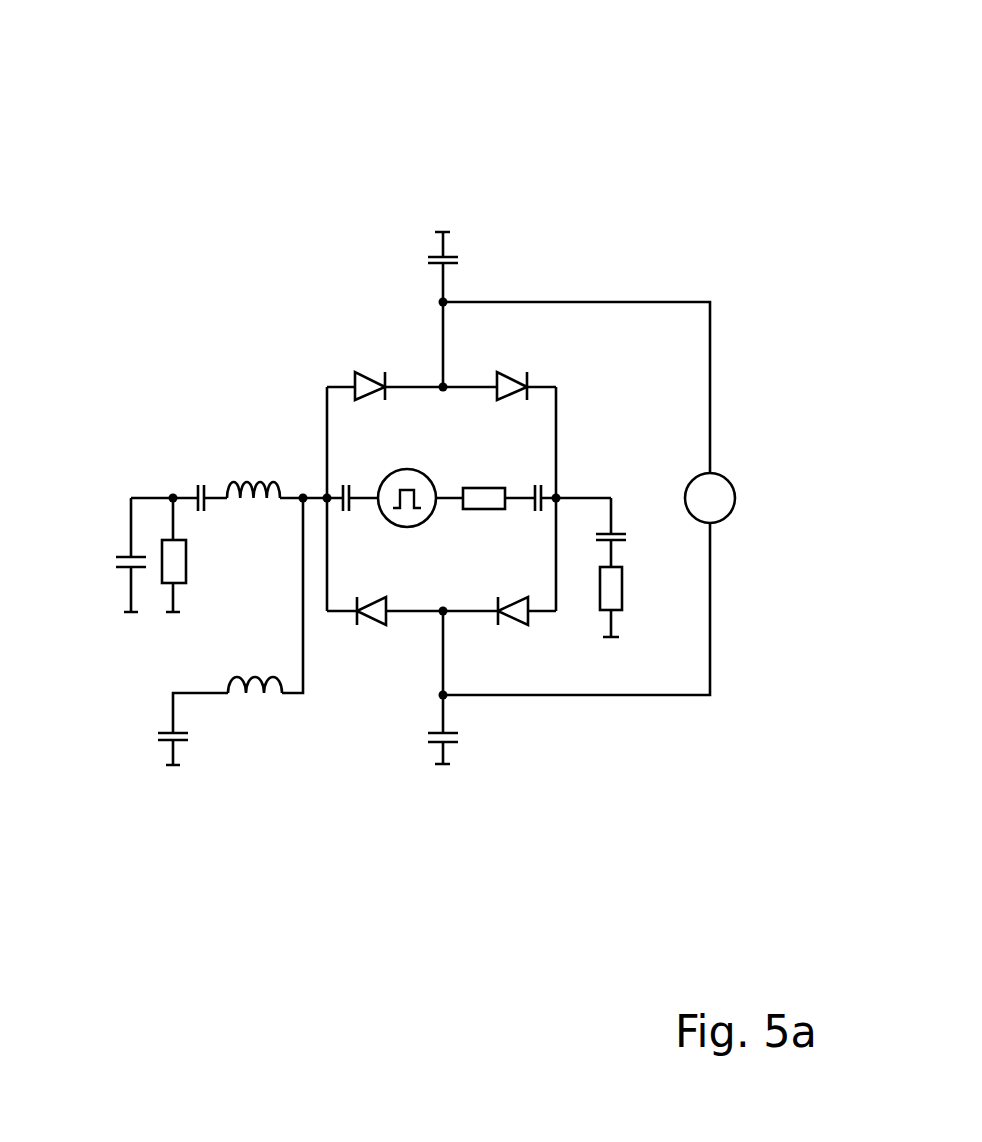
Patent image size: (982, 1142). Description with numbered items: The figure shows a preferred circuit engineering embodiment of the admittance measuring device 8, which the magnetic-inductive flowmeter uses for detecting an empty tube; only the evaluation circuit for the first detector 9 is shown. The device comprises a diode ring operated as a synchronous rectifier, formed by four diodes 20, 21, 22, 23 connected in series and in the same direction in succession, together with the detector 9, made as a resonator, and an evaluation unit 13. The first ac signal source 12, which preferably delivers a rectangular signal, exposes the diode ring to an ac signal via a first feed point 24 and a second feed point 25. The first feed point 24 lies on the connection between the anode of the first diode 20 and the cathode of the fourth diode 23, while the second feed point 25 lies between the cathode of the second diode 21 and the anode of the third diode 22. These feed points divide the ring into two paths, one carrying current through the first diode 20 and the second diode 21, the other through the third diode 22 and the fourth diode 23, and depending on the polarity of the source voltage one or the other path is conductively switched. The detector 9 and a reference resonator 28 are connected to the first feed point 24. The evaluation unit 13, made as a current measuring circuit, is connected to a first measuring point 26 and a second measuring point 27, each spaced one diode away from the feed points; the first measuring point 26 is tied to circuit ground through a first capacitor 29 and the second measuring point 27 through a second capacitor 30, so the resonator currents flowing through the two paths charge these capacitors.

The admittance measuring device 8 is at (203, 114).
The detector 9 is at (178, 424).
The first ac signal source 12 is at (382, 478).
The evaluation unit 13 is at (728, 480).
The first diode 20 is at (369, 372).
The second diode 21 is at (513, 372).
The third diode 22 is at (513, 625).
The fourth diode 23 is at (373, 625).
The first feed point 24 is at (327, 498).
The second feed point 25 is at (556, 498).
The first measuring point 26 is at (443, 387).
The second measuring point 27 is at (443, 611).
The reference resonator 28 is at (148, 765).
The first capacitor 29 is at (433, 257).
The second capacitor 30 is at (434, 743).